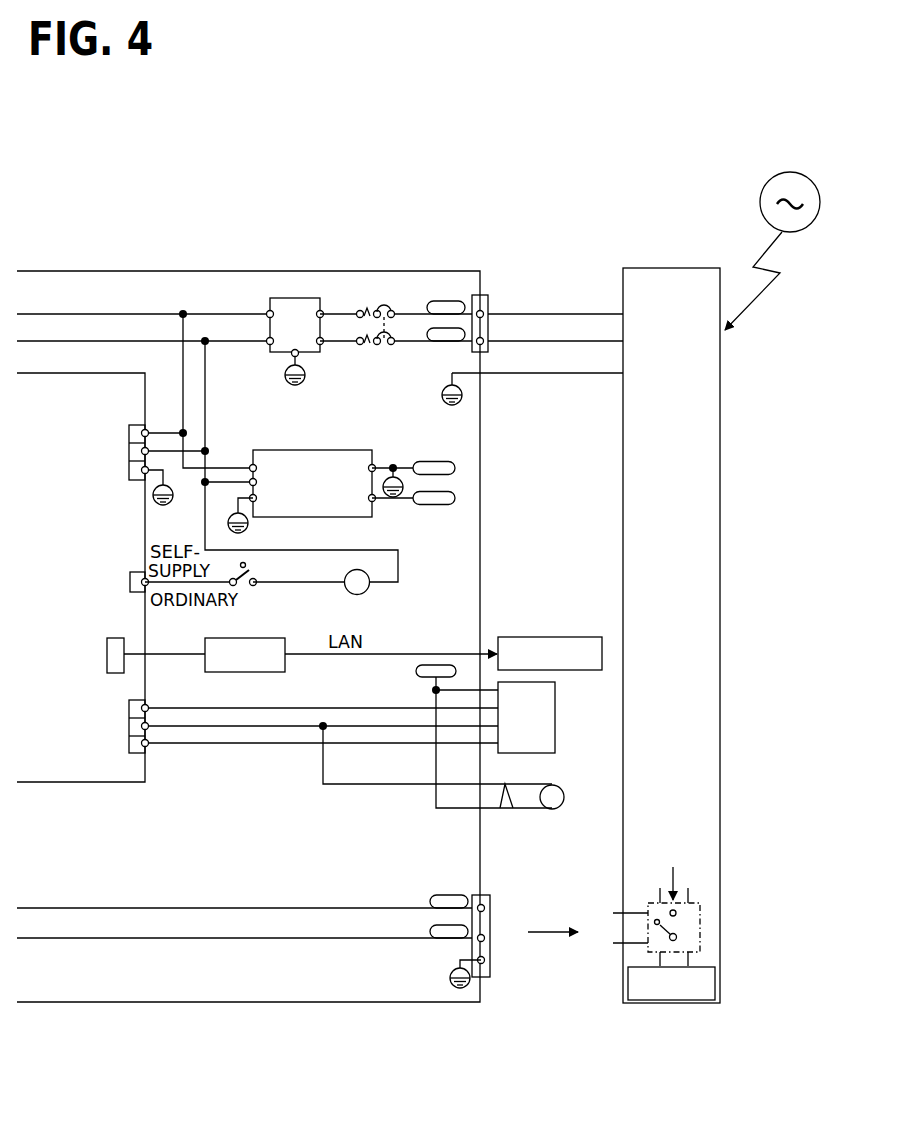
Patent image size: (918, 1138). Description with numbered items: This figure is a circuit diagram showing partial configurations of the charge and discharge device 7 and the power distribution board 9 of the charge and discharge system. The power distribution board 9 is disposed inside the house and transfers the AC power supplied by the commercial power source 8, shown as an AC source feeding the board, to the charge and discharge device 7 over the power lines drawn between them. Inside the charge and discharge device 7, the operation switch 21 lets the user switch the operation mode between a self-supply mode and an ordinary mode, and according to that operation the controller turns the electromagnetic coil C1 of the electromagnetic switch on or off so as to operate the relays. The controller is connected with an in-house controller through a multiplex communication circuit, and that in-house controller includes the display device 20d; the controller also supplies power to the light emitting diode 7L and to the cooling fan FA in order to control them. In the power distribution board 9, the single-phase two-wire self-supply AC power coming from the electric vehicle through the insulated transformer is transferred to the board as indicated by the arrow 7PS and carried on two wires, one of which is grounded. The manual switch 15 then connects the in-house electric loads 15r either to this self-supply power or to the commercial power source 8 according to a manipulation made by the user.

The charge and discharge device 7 is at (313, 265).
The commercial power source 8 is at (783, 171).
The power distribution board 9 is at (673, 268).
The display device 20d is at (578, 637).
The operation switch 21 is at (246, 586).
The electromagnetic coil C1 is at (365, 592).
The light emitting diode 7L is at (555, 725).
The cooling fan FA is at (564, 790).
The manual switch 15 is at (700, 920).
The in-house electric loads 15r is at (683, 1000).
The arrow indicating self-supply power transfer 7PS is at (553, 932).